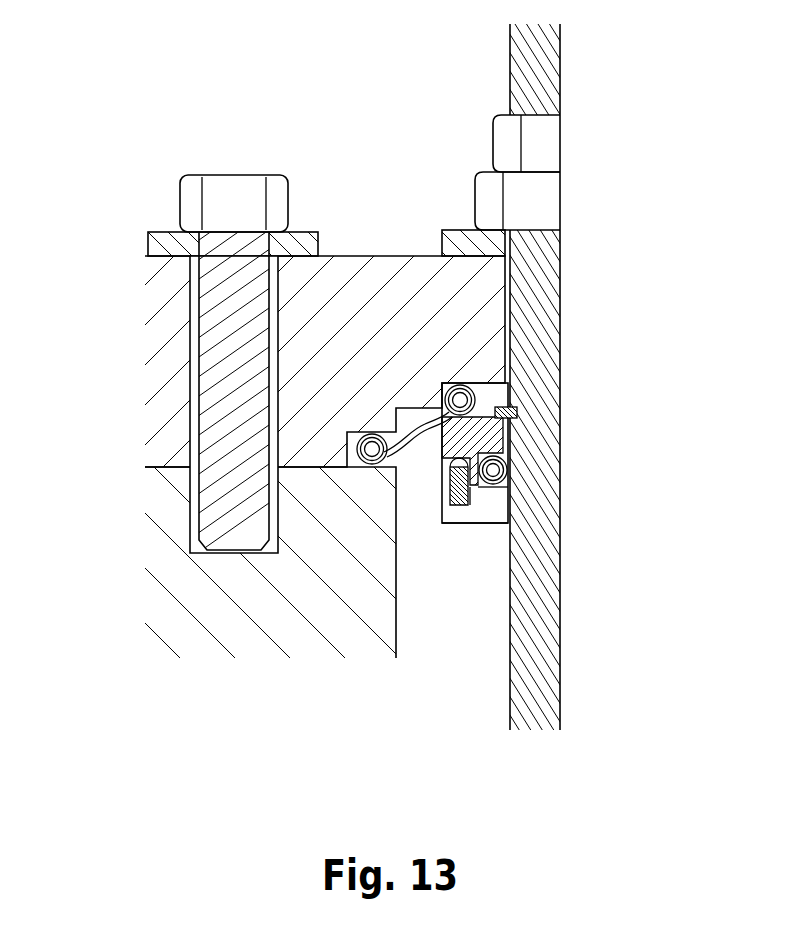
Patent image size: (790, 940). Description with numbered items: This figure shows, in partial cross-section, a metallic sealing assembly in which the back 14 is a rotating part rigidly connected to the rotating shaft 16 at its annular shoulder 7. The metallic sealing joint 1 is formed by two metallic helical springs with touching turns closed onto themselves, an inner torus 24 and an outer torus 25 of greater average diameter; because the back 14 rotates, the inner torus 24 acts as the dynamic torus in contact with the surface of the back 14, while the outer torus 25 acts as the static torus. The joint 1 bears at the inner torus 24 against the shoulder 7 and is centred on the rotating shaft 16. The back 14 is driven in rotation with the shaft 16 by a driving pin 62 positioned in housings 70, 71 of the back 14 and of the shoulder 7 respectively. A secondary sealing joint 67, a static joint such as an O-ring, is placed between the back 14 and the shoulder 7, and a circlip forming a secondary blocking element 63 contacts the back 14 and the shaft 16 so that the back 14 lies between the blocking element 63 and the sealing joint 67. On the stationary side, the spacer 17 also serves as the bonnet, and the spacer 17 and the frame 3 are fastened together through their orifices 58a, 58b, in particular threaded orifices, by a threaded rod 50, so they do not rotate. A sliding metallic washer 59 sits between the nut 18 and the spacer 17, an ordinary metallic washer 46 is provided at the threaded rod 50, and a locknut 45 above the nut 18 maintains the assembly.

The metallic sealing joint 1 is at (420, 443).
The frame 3 is at (193, 585).
The annular shoulder 7 is at (487, 523).
The back 14 is at (497, 440).
The rotating shaft 16 is at (550, 598).
The spacer 17 is at (495, 333).
The nut 18 is at (525, 197).
The inner torus 24 is at (465, 385).
The outer torus 25 is at (358, 455).
The locknut 45 is at (532, 142).
The metallic washer 46 is at (308, 232).
The threaded rod 50 is at (210, 275).
The bolt hole upper portion 58a is at (193, 342).
The orifice 58b is at (190, 493).
The sliding metallic washer 59 is at (452, 232).
The driving pin 62 is at (458, 520).
The secondary blocking element 63 is at (505, 416).
The secondary sealing joint 67 is at (497, 483).
The housing 70 is at (498, 471).
The housing 71 is at (490, 500).